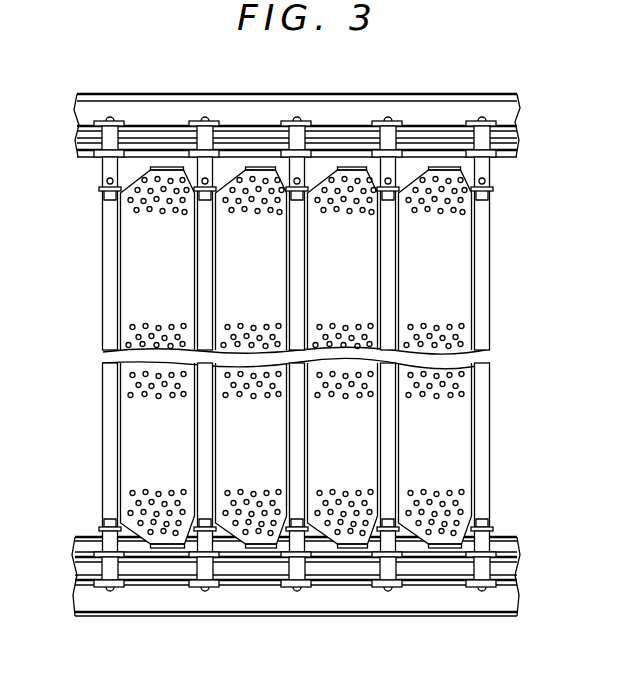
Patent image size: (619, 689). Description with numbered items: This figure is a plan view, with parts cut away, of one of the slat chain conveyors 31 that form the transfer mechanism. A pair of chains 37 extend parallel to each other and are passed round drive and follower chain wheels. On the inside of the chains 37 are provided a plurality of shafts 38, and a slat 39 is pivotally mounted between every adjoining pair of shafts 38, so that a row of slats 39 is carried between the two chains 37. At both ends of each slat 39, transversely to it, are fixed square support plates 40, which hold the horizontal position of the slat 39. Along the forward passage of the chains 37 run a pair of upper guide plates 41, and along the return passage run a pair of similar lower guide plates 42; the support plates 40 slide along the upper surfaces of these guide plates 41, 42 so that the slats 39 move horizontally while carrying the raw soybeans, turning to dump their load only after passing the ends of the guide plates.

The slat chain conveyor 31 is at (340, 348).
The chains 37 is at (169, 122).
The shafts 38 is at (103, 172).
The slats 39 is at (296, 411).
The square support plates 40 is at (445, 172).
The upper guide plates 41 is at (350, 108).
The lower guide plates 42 is at (510, 597).